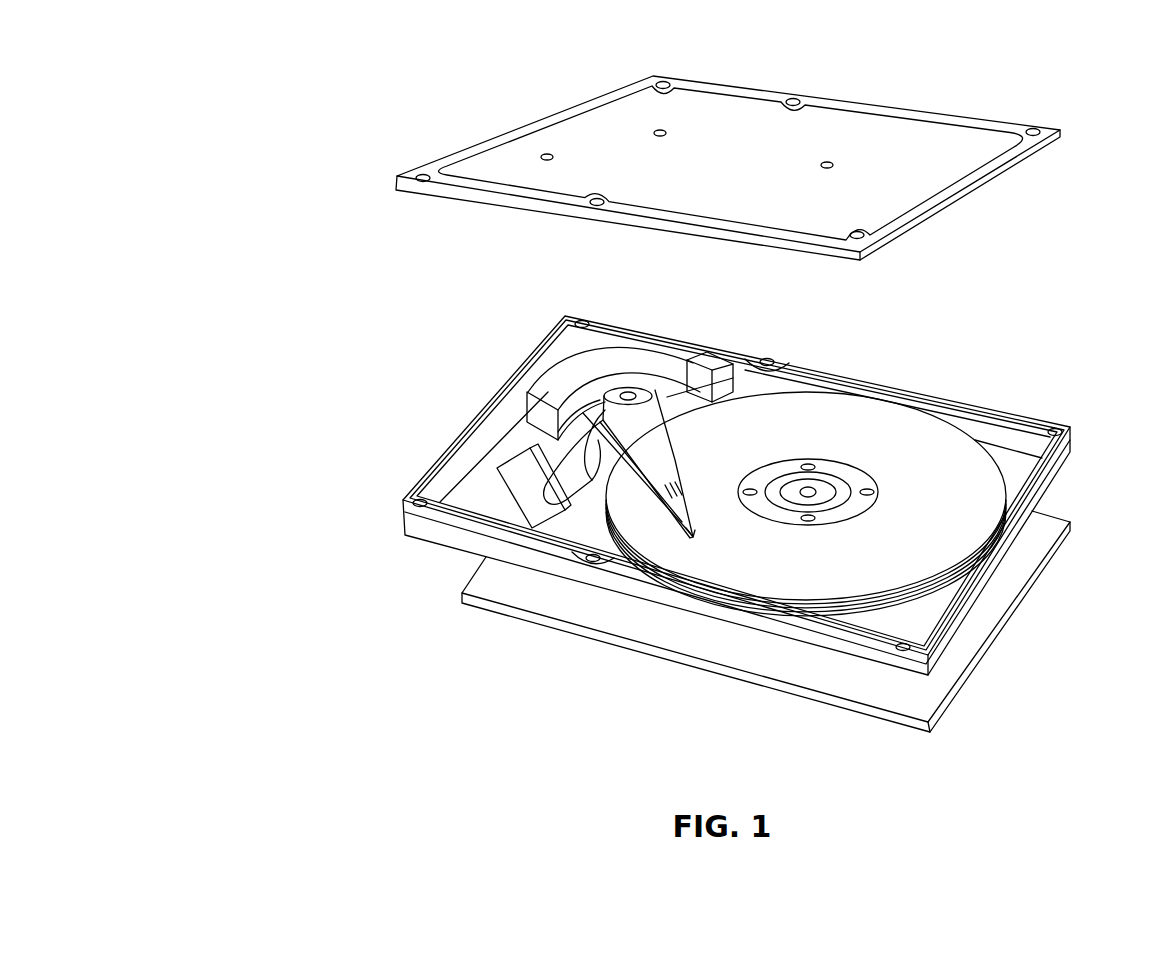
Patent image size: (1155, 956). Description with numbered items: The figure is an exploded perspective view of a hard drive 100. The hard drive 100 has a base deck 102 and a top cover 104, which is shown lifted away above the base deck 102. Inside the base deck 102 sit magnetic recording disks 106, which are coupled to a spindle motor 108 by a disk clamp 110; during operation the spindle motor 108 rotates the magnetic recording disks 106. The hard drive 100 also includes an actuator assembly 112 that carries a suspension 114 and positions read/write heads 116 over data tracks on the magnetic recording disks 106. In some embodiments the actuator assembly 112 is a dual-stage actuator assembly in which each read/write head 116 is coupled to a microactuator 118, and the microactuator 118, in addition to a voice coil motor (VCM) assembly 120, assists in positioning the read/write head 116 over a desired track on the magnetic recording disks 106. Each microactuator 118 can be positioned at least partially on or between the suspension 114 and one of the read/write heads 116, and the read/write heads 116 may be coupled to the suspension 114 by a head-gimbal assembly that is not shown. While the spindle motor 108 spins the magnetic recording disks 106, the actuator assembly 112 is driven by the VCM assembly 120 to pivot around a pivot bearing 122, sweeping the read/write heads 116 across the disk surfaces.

The hard drive 100 is at (315, 124).
The base deck 102 is at (1052, 468).
The top cover 104 is at (868, 158).
The magnetic recording disks 106 is at (921, 514).
The spindle motor 108 is at (825, 486).
The disk clamp 110 is at (852, 505).
The actuator assembly 112 is at (666, 444).
The suspension 114 is at (657, 472).
The read/write heads 116 is at (693, 537).
The microactuator 118 is at (683, 497).
The voice coil motor (VCM) assembly 120 is at (566, 357).
The pivot bearing 122 is at (640, 392).